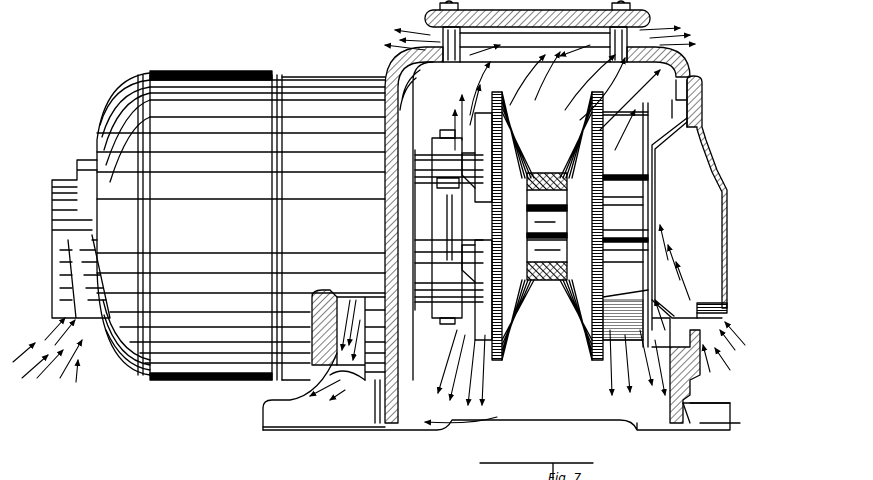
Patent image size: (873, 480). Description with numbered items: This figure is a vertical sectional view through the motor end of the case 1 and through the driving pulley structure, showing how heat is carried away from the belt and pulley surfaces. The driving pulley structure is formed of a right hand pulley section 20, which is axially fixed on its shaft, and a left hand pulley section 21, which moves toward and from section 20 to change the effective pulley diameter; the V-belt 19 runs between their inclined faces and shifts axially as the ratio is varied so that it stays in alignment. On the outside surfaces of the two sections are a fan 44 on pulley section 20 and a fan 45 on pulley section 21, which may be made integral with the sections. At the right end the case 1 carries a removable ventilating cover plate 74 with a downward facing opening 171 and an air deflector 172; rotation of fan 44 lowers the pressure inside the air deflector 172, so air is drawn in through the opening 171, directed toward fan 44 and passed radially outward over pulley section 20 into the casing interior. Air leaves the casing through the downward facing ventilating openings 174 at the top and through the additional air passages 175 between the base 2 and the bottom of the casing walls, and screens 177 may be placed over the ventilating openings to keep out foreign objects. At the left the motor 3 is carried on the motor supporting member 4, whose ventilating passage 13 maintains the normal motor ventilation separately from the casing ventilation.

The case 1 is at (672, 62).
The base 2 is at (263, 428).
The motor body 3 is at (196, 72).
The motor supporting member 4 is at (373, 378).
The ventilating passage 13 is at (290, 387).
The V-belt 19 is at (547, 282).
The pulley section 20 is at (590, 110).
The pulley section 21 is at (503, 106).
The fan 44 is at (635, 118).
The fan 45 is at (475, 125).
The ventilating cover plate 74 is at (703, 112).
The opening 171 is at (720, 312).
The air deflector 172 is at (676, 140).
The ventilating openings 174 is at (430, 28).
The air passages 175 is at (688, 425).
The screen 177 is at (718, 296).